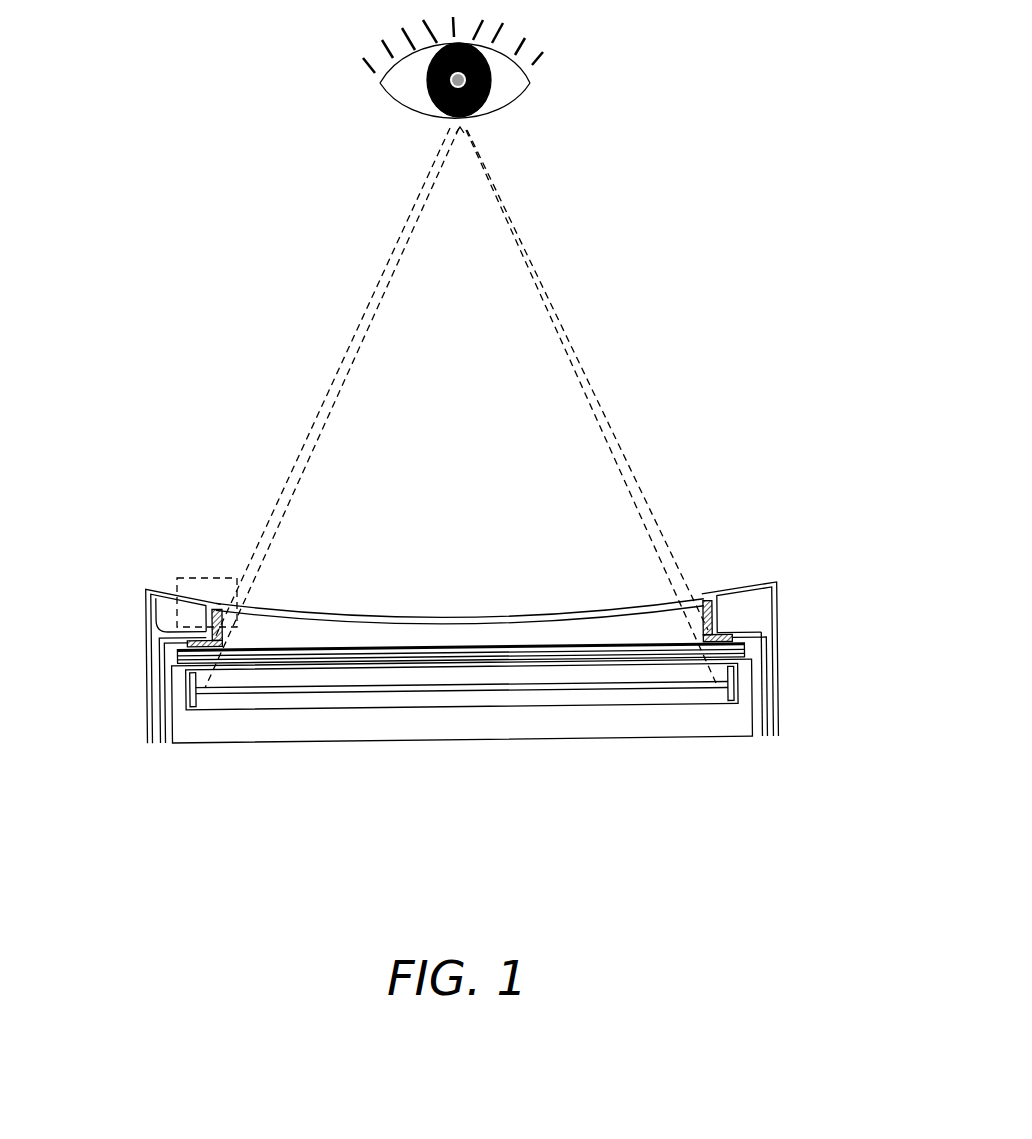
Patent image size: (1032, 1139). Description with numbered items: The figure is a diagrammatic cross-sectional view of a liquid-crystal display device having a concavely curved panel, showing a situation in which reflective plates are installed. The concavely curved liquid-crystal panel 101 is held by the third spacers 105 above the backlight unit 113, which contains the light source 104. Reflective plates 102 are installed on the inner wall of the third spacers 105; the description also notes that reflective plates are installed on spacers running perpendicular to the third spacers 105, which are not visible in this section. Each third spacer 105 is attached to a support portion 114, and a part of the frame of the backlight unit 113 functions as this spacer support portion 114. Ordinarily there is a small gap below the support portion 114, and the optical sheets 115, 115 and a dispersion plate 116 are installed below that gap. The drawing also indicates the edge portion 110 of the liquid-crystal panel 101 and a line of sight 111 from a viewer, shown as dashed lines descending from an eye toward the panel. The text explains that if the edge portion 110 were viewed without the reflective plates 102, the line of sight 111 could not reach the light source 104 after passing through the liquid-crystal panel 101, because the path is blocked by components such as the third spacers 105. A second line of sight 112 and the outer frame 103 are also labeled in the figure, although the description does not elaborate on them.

The liquid-crystal panel 101 is at (365, 617).
The reflective plates 102 is at (255, 650).
The front frame (bezel) 103 is at (752, 585).
The light source 104 is at (623, 690).
The third spacers 105 is at (190, 650).
The edge portion 110 is at (183, 576).
The line of sight 111 is at (300, 462).
The line of sight 112 is at (272, 537).
The backlight unit 113 is at (664, 752).
The support portion 114 is at (153, 592).
The optical sheets 115 is at (412, 650).
The dispersion plate 116 is at (535, 663).